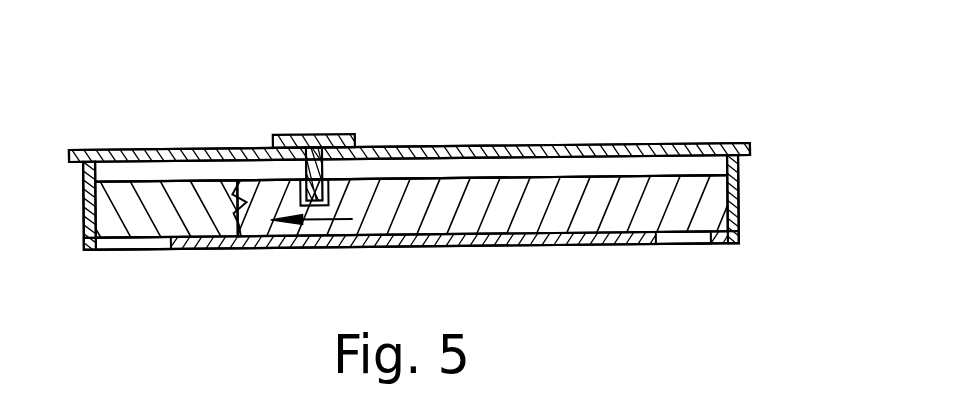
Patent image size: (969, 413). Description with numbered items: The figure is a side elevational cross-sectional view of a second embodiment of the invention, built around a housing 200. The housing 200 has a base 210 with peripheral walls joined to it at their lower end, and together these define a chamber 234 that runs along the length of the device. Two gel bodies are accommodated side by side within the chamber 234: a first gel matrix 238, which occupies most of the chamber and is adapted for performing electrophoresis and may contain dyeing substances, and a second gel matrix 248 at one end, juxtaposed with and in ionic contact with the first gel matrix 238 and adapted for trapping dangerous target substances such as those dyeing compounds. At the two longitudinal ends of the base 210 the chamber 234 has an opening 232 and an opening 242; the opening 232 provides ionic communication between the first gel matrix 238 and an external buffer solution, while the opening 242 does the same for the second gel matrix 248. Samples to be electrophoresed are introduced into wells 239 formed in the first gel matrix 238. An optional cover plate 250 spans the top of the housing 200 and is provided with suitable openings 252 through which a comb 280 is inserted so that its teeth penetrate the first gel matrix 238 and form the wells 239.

The housing 200 is at (107, 133).
The base 210 is at (585, 245).
The opening 232 is at (683, 242).
The chamber 234 is at (425, 167).
The first gel matrix 238 is at (493, 190).
The wells 239 is at (377, 162).
The opening 242 is at (130, 251).
The second gel matrix 248 is at (153, 193).
The cover plate 250 is at (632, 143).
The openings 252 is at (347, 145).
The comb 280 is at (303, 140).